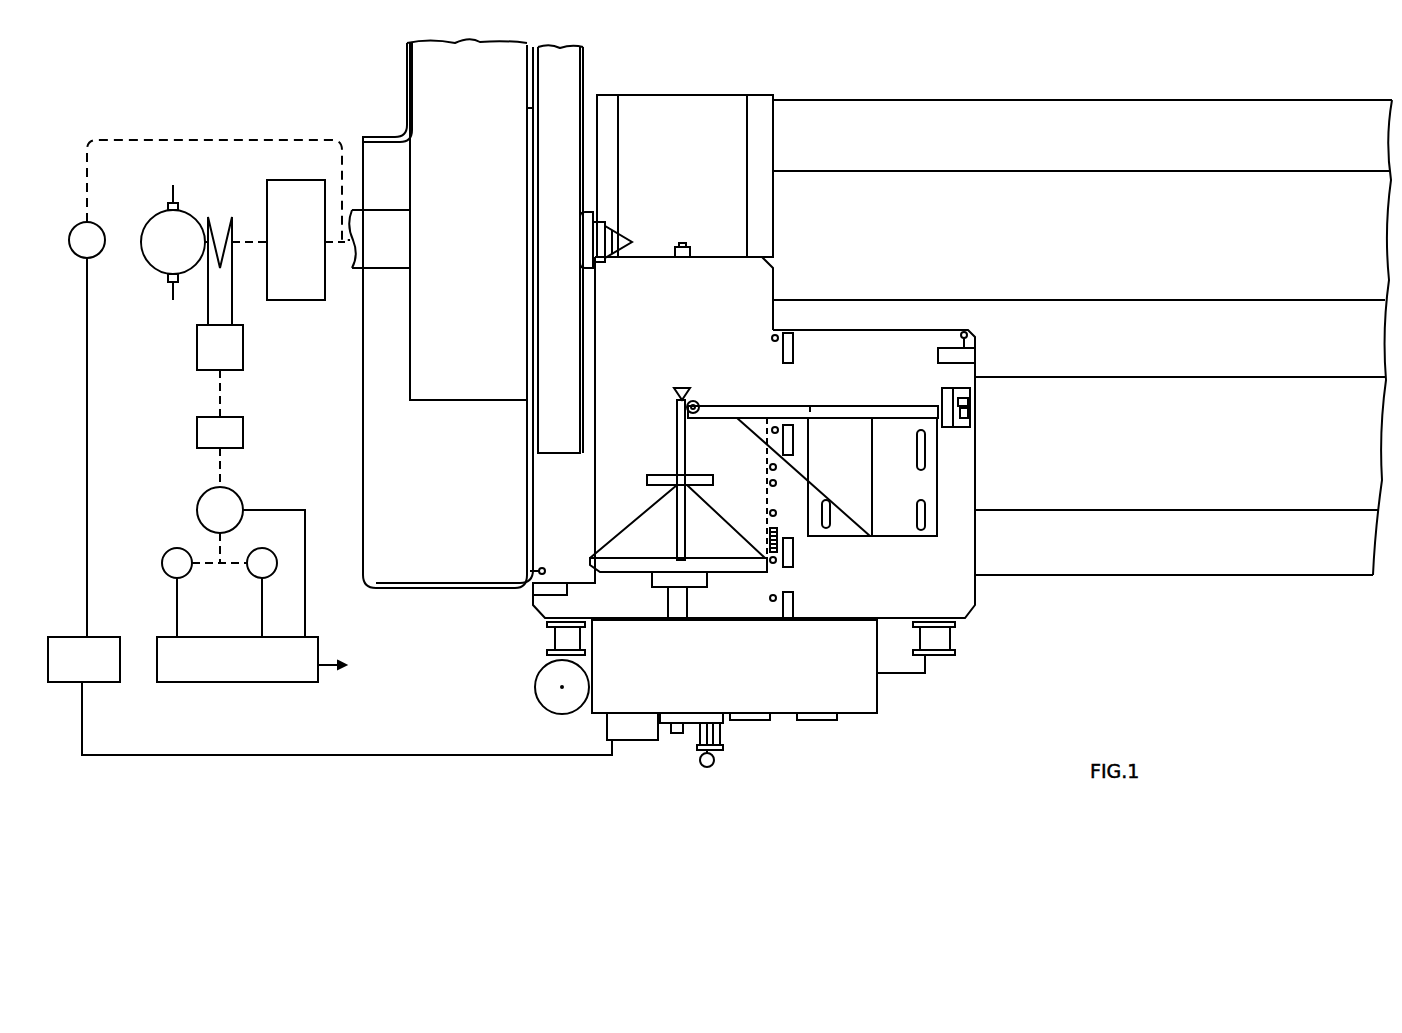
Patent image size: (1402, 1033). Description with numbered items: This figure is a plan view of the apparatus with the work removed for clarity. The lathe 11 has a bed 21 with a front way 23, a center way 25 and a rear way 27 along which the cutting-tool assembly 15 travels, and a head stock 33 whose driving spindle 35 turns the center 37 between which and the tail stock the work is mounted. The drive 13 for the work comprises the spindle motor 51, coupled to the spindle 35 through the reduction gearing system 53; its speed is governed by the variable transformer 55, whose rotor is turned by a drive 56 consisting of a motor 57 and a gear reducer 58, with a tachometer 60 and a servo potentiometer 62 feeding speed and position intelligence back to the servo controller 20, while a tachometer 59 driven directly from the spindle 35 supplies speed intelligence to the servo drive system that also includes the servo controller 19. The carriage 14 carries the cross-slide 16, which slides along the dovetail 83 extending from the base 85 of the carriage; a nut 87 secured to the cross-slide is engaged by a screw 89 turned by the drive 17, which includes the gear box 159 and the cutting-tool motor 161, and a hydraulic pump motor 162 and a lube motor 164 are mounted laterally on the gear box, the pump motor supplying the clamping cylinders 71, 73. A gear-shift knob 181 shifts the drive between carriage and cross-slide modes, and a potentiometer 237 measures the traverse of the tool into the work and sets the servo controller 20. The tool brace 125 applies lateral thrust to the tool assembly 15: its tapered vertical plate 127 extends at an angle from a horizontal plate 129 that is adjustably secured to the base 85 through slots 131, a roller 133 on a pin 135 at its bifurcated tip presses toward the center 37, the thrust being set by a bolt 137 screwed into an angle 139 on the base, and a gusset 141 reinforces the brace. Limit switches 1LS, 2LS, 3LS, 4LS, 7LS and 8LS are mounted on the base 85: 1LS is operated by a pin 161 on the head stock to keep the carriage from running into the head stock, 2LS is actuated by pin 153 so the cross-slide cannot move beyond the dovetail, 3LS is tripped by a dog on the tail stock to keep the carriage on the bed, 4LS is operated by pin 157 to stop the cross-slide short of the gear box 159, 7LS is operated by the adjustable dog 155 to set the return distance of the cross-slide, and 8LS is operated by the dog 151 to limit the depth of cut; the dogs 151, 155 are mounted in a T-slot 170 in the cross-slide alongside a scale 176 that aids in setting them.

The lathe 11 is at (1012, 88).
The drive 13 is at (237, 196).
The carriage 14 is at (898, 582).
The cutting-tool assembly 15 is at (672, 429).
The cross-slide 16 is at (697, 295).
The drive 17 is at (590, 739).
The servo controller 19 is at (94, 669).
The servo controller 20 is at (246, 669).
The bed 21 is at (1212, 410).
The front way 23 is at (1172, 515).
The center way 25 is at (1158, 378).
The rear way 27 is at (1214, 172).
The head stock 33 is at (567, 408).
The driving spindle 35 is at (398, 218).
The center 37 is at (620, 240).
The motor 51 is at (156, 230).
The reduction gearing system 53 is at (310, 182).
The variable transformer 55 is at (233, 355).
The drive 56 is at (243, 550).
The motor 57 is at (207, 502).
The gear reducer 58 is at (237, 425).
The tachometer 59 is at (90, 232).
The tachometer 60 is at (272, 556).
The servo potentiometer 62 is at (175, 554).
The hydraulic cylinder 71 is at (555, 637).
The hydraulic cylinder 73 is at (948, 637).
The dovetail 83 is at (618, 160).
The base 85 is at (983, 478).
The nut 87 is at (655, 587).
The screw 89 is at (663, 605).
The tool brace 125 is at (856, 445).
The tapered vertical plate 127 is at (731, 404).
The horizontal plate 129 is at (908, 540).
The slots 131 is at (919, 500).
The roller 133 is at (694, 413).
The pin 135 is at (696, 390).
The bolt 137 is at (972, 408).
The angle 139 is at (942, 396).
The gusset 141 is at (868, 475).
The pin 151 is at (770, 468).
The pin 153 is at (775, 400).
The adjustable dog 155 is at (770, 512).
The pin 157 is at (773, 572).
The gear box 159 is at (833, 682).
The cutting-tool motor 161 is at (650, 750).
The hydraulic pump motor 162 is at (548, 682).
The lube motor 164 is at (908, 676).
The T-slot 170 is at (770, 480).
The scale 176 is at (778, 535).
The gear-shift knob 181 is at (725, 748).
The potentiometer 237 is at (369, 665).
The limit switch 1LS is at (559, 571).
The limit switch 2LS is at (793, 348).
The limit switch 3LS is at (966, 357).
The limit switch 4LS is at (795, 600).
The limit switch 7LS is at (795, 562).
The limit switch 8LS is at (788, 422).